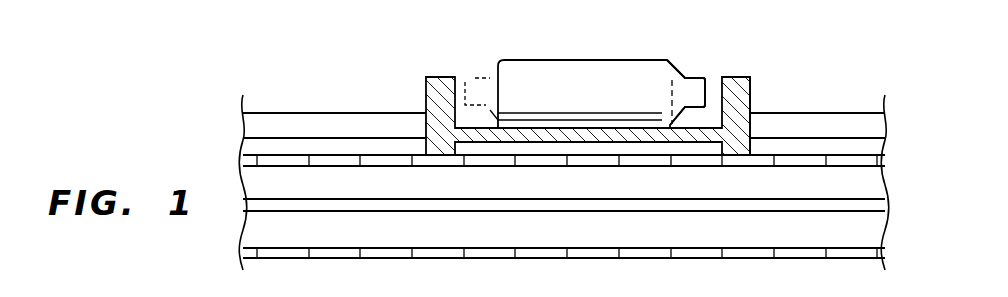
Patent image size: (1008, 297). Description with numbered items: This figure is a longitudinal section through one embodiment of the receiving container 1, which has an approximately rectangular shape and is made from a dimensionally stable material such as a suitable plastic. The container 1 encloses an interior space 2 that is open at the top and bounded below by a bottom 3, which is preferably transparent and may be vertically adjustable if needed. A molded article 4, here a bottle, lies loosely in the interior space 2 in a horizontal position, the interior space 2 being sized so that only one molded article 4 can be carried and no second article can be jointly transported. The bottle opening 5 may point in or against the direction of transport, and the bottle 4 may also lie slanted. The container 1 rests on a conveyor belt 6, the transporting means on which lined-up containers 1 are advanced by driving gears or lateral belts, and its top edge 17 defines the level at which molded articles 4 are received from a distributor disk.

The receiving container 1 is at (758, 98).
The interior space 2 is at (470, 118).
The bottom 3 is at (518, 134).
The molded article 4 is at (640, 73).
The bottle opening 5 is at (700, 88).
The conveyor belt 6 is at (867, 157).
The top edge 17 is at (742, 76).